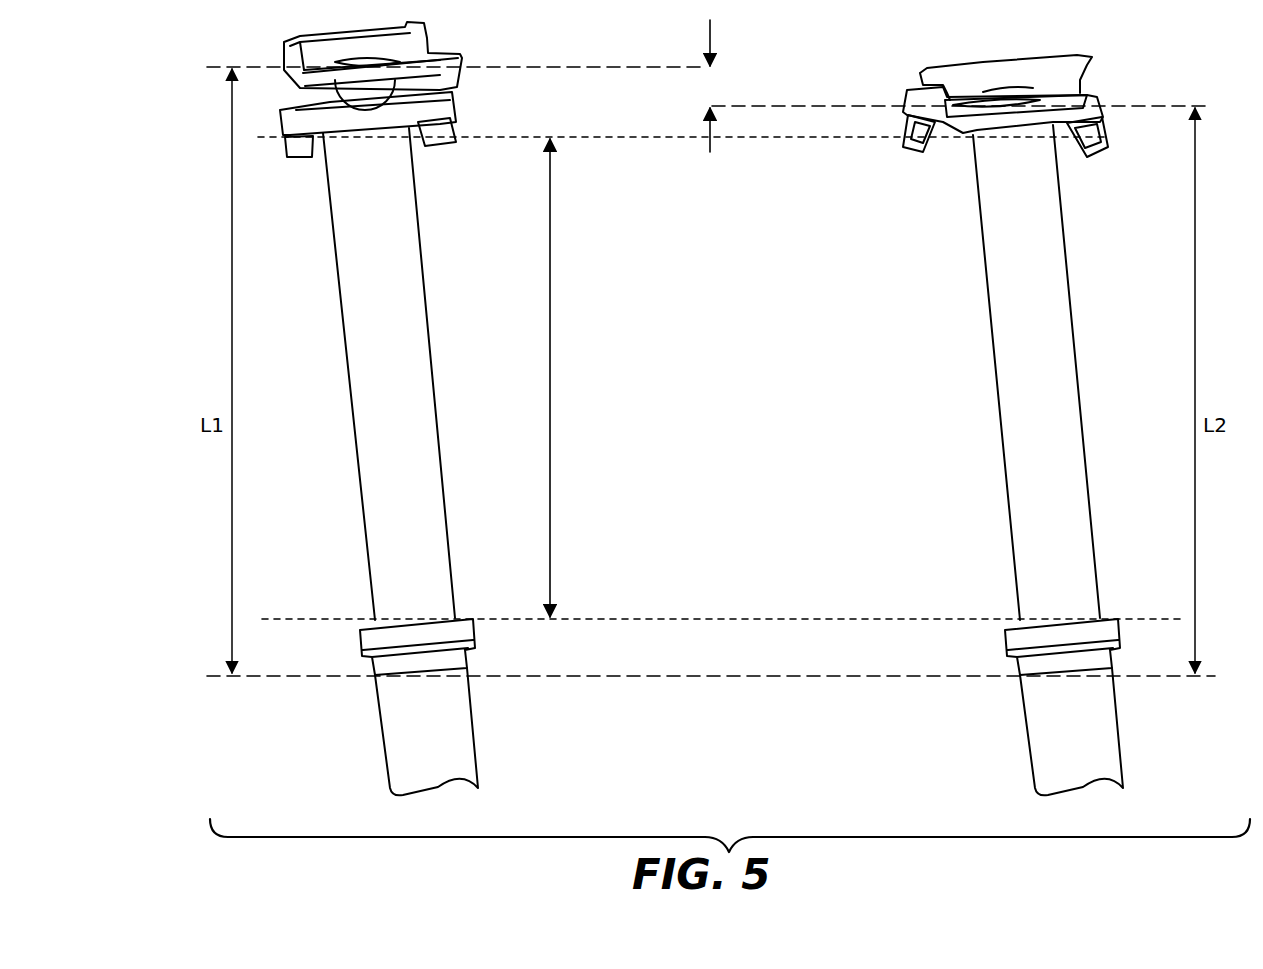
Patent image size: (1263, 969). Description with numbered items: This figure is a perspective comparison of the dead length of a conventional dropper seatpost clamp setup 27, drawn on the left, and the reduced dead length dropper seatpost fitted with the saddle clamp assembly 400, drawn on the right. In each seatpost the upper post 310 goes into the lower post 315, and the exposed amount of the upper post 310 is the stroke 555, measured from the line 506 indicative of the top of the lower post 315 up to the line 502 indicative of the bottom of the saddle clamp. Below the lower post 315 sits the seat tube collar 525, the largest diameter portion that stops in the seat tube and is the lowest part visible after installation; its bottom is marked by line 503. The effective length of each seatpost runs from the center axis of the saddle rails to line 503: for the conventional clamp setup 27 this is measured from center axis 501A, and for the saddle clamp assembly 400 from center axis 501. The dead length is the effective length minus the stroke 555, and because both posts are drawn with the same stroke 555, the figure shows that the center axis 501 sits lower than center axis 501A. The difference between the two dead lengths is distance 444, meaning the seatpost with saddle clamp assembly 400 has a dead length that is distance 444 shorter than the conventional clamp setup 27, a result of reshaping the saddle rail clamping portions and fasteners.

The conventional dropper seatpost clamp setup 27 is at (430, 42).
The saddle clamp assembly 400 is at (1090, 70).
The upper post 310 is at (433, 400).
The lower post 315 is at (410, 754).
The seat tube collar 525 is at (418, 672).
The center axis of the saddle rails 501A is at (560, 67).
The center axis of the saddle rails 501 is at (770, 106).
The line indicative of the bottom of the saddle clamp 502 is at (770, 137).
The line indicative of the top of lower post 506 is at (856, 618).
The line indicating the bottom of the seat tube collar 503 is at (768, 677).
The distance 444 is at (708, 88).
The stroke 555 is at (552, 457).